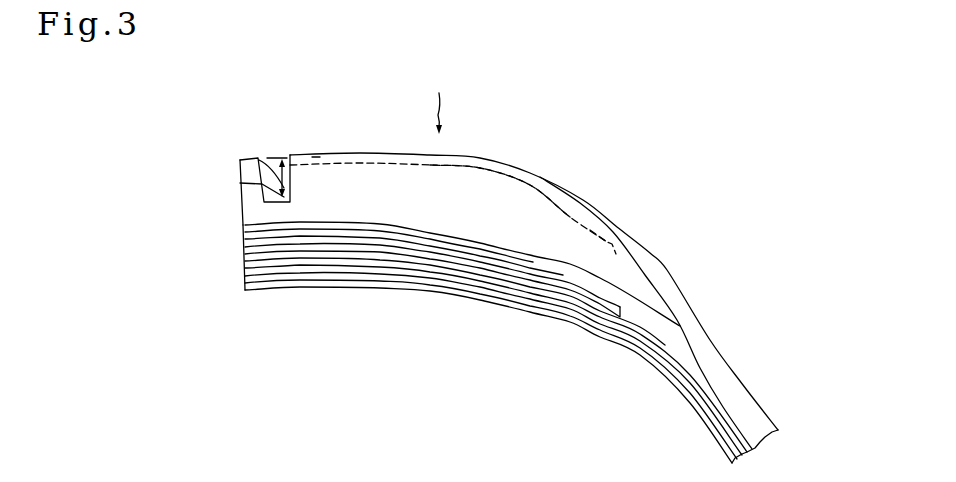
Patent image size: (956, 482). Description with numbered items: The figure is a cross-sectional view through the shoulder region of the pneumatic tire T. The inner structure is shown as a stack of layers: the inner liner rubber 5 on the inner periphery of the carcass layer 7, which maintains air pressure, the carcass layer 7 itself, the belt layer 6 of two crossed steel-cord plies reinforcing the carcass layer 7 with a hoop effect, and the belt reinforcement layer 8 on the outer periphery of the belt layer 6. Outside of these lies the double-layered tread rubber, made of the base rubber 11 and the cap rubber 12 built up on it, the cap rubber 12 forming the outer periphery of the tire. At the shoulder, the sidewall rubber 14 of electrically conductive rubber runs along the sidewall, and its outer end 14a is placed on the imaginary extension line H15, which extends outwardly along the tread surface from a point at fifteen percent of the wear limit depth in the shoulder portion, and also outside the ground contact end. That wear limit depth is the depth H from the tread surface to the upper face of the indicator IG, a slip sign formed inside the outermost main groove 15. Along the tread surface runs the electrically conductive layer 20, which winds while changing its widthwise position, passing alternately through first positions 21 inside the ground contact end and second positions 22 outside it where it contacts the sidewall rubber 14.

The sidewall rubber 14 is at (692, 313).
The outer end of the sidewall rubber 14a is at (540, 177).
The electrically conductive layer 20 is at (523, 178).
The first positions 21 is at (343, 167).
The second positions 22 is at (612, 242).
The main groove 15 is at (270, 158).
The depth H is at (268, 158).
The imaginary extension line H15 is at (316, 157).
The indicator IG is at (240, 183).
The cap rubber 12 is at (243, 212).
The base rubber 11 is at (243, 233).
The pneumatic tire T is at (440, 99).
The inner liner rubber 5 is at (338, 288).
The belt layer 6 is at (383, 263).
The carcass layer 7 is at (422, 280).
The belt reinforcement layer 8 is at (465, 250).